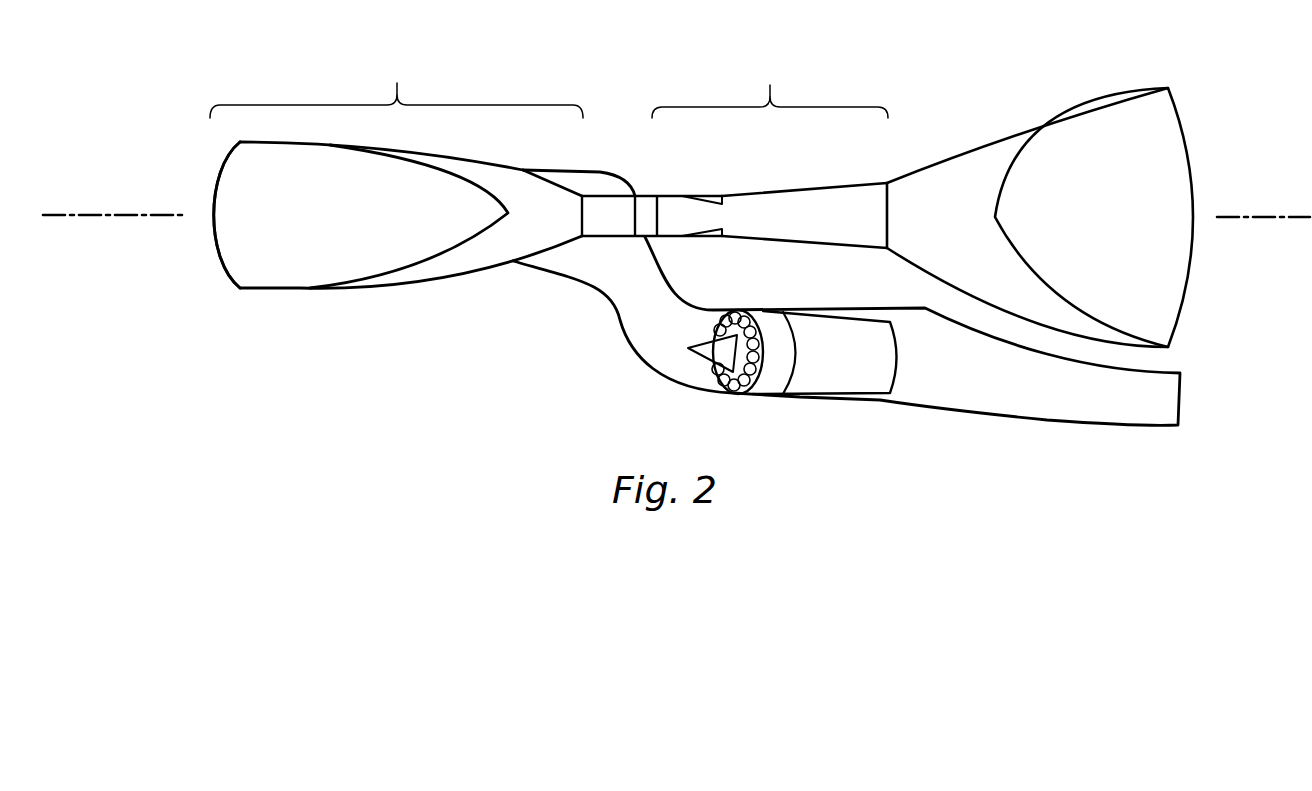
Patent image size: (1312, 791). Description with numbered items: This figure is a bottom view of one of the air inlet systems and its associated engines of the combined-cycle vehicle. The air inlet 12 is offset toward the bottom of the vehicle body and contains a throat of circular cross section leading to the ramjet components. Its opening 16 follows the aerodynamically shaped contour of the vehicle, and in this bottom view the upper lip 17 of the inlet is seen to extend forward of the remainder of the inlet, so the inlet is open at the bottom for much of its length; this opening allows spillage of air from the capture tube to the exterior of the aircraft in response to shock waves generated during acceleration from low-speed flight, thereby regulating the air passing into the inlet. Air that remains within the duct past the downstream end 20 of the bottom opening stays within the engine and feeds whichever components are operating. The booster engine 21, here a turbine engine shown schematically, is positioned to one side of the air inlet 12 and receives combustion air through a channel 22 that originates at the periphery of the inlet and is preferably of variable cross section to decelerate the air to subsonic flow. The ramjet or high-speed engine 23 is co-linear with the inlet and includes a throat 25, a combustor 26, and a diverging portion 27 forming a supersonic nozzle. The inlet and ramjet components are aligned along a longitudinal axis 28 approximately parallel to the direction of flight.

The air inlet 12 is at (396, 84).
The opening 16 is at (222, 260).
The upper lip 17 is at (237, 223).
The downstream end 20 is at (503, 228).
The booster engine 21 is at (835, 373).
The channel 22 is at (630, 353).
The ramjet engine 23 is at (770, 143).
The throat 25 is at (587, 210).
The combustor 26 is at (777, 212).
The diverging portion 27 is at (1040, 106).
The longitudinal axis 28 is at (130, 212).